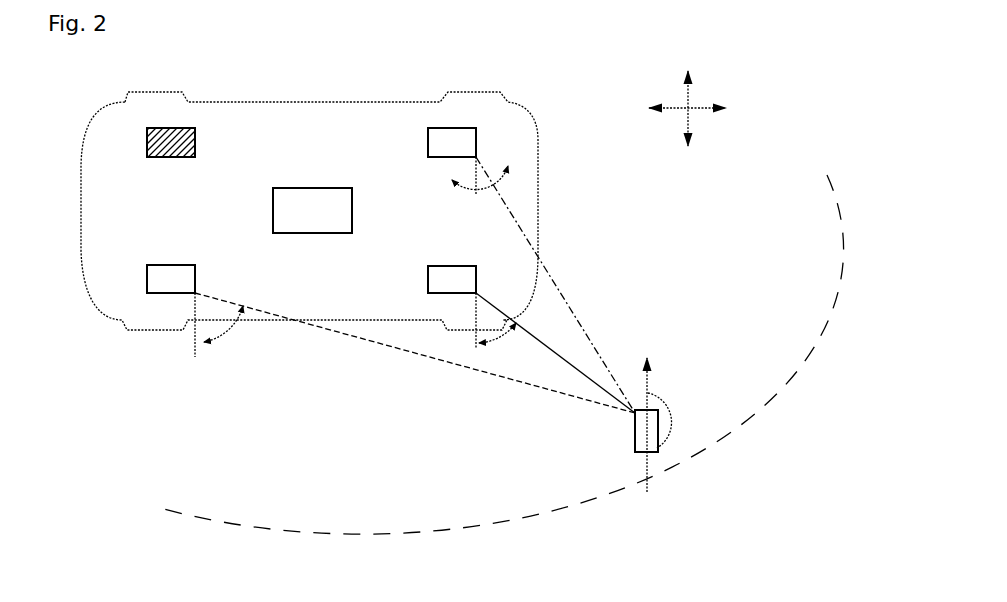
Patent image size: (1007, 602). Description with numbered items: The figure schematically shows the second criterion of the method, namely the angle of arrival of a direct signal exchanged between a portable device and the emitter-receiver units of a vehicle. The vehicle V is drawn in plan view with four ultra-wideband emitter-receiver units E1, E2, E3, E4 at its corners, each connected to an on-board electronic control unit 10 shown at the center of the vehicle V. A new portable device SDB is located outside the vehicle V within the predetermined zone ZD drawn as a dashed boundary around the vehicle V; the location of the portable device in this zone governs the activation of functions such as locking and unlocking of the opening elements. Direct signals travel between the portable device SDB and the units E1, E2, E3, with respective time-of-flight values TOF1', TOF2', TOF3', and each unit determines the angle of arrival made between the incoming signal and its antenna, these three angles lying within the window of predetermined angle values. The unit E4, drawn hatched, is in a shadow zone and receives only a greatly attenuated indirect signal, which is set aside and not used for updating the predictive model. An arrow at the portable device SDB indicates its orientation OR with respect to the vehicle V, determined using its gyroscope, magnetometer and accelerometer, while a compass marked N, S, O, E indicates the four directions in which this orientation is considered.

The vehicle V is at (336, 297).
The electronic control unit 10 is at (308, 207).
The emitter-receiver unit E1 is at (158, 283).
The emitter-receiver unit E2 is at (440, 282).
The emitter-receiver unit E3 is at (448, 138).
The emitter-receiver unit E4 is at (175, 135).
The new portable device SDB is at (632, 432).
The predetermined zone ZD is at (840, 245).
The orientation OR is at (675, 420).
The time-of-flight value TOF1' is at (415, 354).
The time-of-flight value TOF2' is at (555, 353).
The time-of-flight value TOF3' is at (555, 285).
The north direction N is at (687, 97).
The south direction S is at (688, 161).
The origin of the orthonormal frame of reference O is at (677, 109).
The east direction E is at (738, 109).